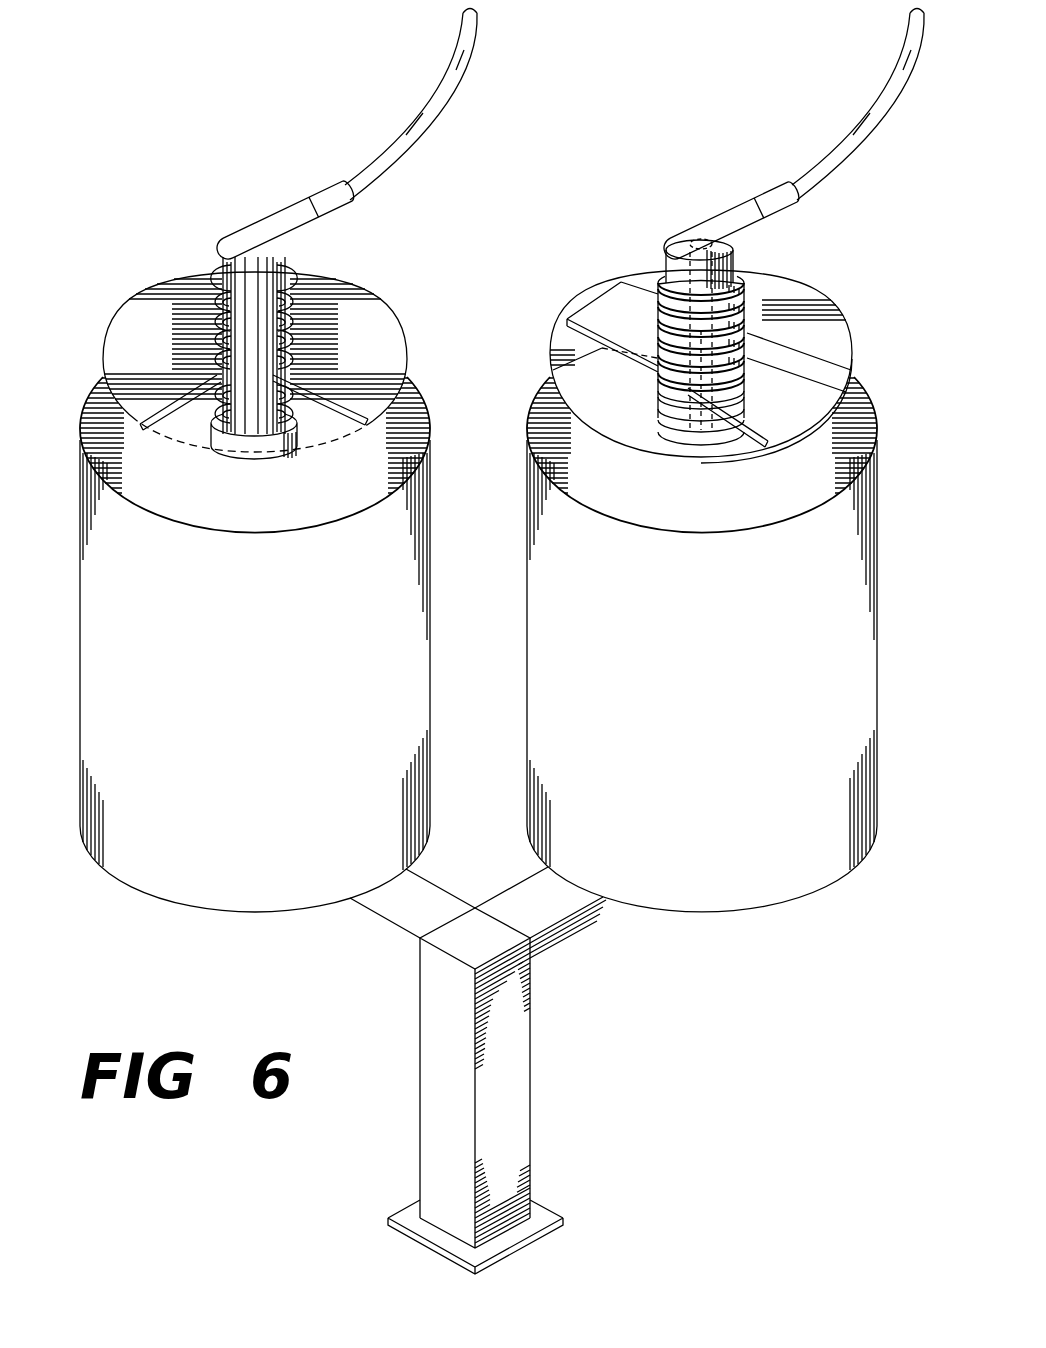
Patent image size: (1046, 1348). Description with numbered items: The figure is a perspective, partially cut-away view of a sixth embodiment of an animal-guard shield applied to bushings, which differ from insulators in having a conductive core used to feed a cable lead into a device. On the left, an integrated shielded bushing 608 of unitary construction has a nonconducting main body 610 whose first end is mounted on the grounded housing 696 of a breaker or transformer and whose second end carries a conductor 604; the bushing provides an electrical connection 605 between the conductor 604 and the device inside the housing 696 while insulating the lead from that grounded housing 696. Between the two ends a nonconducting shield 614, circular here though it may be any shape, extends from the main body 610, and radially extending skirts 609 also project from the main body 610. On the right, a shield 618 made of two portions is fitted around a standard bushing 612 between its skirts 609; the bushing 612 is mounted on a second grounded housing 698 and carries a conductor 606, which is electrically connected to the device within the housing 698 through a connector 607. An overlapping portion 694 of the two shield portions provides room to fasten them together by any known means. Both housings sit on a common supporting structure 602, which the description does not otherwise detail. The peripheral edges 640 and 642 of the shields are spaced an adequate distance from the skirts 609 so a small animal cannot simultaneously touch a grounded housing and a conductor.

The pedestal stand 602 is at (540, 1092).
The conductor 604 is at (287, 221).
The electrical connection 605 is at (250, 278).
The conductor 606 is at (766, 256).
The connector 607 is at (665, 270).
The shielded bushing 608 is at (283, 234).
The skirts 609 is at (213, 322).
The main body 610 is at (299, 268).
The standard bushing 612 is at (768, 227).
The shield 614 is at (380, 300).
The shield 618 is at (820, 298).
The edge 640 is at (407, 364).
The edge 642 is at (850, 363).
The overlapping portion 694 is at (615, 280).
The grounded housing 696 is at (429, 575).
The grounded housing 698 is at (875, 573).